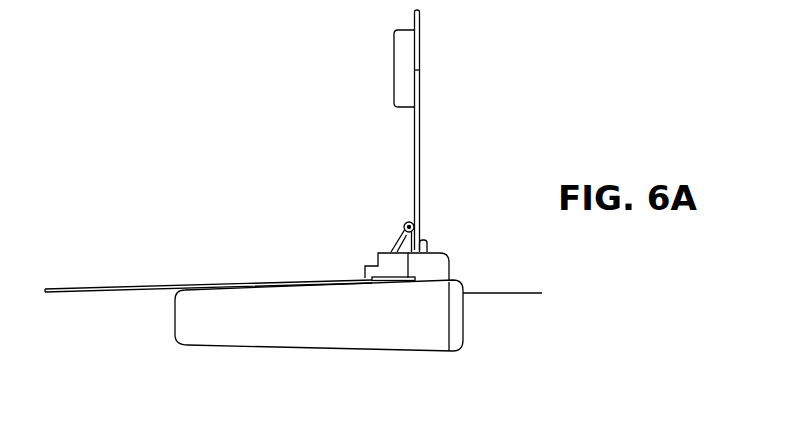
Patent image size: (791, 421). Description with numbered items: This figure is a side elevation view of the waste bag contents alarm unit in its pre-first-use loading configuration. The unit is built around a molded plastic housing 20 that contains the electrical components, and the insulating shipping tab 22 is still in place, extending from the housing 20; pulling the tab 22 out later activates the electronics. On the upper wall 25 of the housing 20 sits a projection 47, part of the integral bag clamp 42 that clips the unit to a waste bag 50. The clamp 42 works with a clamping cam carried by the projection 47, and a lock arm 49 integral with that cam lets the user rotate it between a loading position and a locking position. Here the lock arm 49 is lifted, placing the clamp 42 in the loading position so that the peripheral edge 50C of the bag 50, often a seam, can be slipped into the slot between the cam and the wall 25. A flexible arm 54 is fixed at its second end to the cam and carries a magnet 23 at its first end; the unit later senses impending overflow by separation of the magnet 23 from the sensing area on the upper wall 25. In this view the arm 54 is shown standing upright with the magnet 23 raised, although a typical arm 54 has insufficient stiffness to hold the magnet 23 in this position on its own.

The housing 20 is at (418, 332).
The insulating shipping tab 22 is at (503, 293).
The magnet 23 is at (404, 70).
The upper wall 25 is at (347, 283).
The bag clamp 42 is at (392, 232).
The projection 47 is at (438, 261).
The lock arm 49 is at (406, 223).
The waste bag 50 is at (105, 289).
The peripheral edge 50C is at (365, 277).
The flexible arm 54 is at (418, 125).